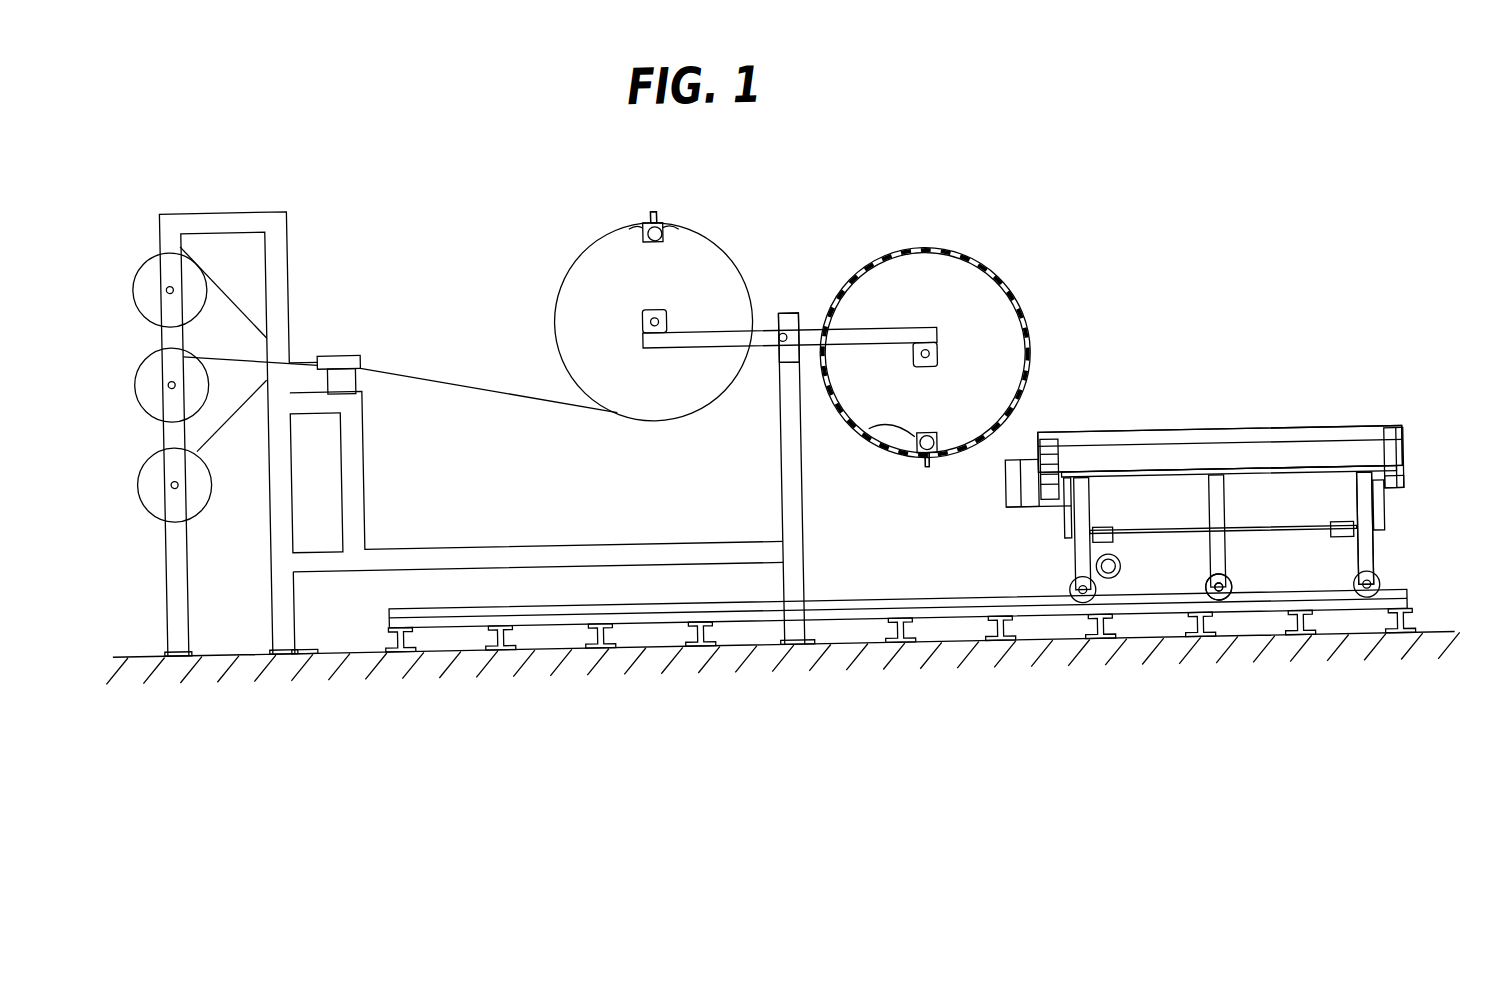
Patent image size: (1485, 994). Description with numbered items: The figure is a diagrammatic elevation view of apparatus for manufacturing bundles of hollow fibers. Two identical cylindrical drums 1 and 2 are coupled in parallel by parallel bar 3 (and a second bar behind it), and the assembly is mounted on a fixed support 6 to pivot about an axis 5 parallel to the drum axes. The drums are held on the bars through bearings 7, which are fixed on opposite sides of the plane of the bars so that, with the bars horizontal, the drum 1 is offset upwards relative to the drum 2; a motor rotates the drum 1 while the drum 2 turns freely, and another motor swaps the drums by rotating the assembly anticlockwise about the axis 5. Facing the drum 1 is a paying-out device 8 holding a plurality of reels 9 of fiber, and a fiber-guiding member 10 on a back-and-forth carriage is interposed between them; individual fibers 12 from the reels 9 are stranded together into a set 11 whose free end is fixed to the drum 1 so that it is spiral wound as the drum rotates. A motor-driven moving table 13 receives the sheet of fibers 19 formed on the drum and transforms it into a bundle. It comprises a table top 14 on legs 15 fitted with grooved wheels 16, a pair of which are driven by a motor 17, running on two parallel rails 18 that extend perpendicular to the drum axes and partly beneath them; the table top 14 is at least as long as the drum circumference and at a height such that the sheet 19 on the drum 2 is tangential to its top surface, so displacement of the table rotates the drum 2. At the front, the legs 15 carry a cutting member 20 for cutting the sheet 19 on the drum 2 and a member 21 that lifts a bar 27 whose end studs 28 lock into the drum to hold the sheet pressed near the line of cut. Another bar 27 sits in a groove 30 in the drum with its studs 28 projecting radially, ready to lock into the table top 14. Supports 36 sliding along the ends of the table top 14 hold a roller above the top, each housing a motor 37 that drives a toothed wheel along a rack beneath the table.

The cylindrical drum 1 is at (592, 274).
The cylindrical drum 2 is at (922, 280).
The parallel bar 3 is at (815, 336).
The axis 5 is at (788, 331).
The fixed support 6 is at (784, 465).
The bearing 7 is at (666, 311).
The paying-out device 8 is at (233, 178).
The reel 9 is at (151, 272).
The fiber-guiding member 10 is at (346, 326).
The stranded-together set of fibers 11 is at (455, 377).
The individual fiber 12 is at (234, 408).
The motor-driven moving table 13 is at (1222, 420).
The table top 14 is at (1327, 476).
The leg 15 is at (1364, 572).
The grooved wheel 16 is at (1237, 594).
The motor 17 is at (1121, 577).
The rail 18 is at (946, 619).
The sheet of fibers 19 is at (1008, 294).
The cutting member 20 is at (1030, 495).
The installing member 21 is at (1014, 492).
The bar 27 is at (637, 225).
The stud 28 is at (659, 210).
The groove 30 is at (681, 227).
The support 36 is at (1402, 462).
The motor 37 is at (1388, 495).